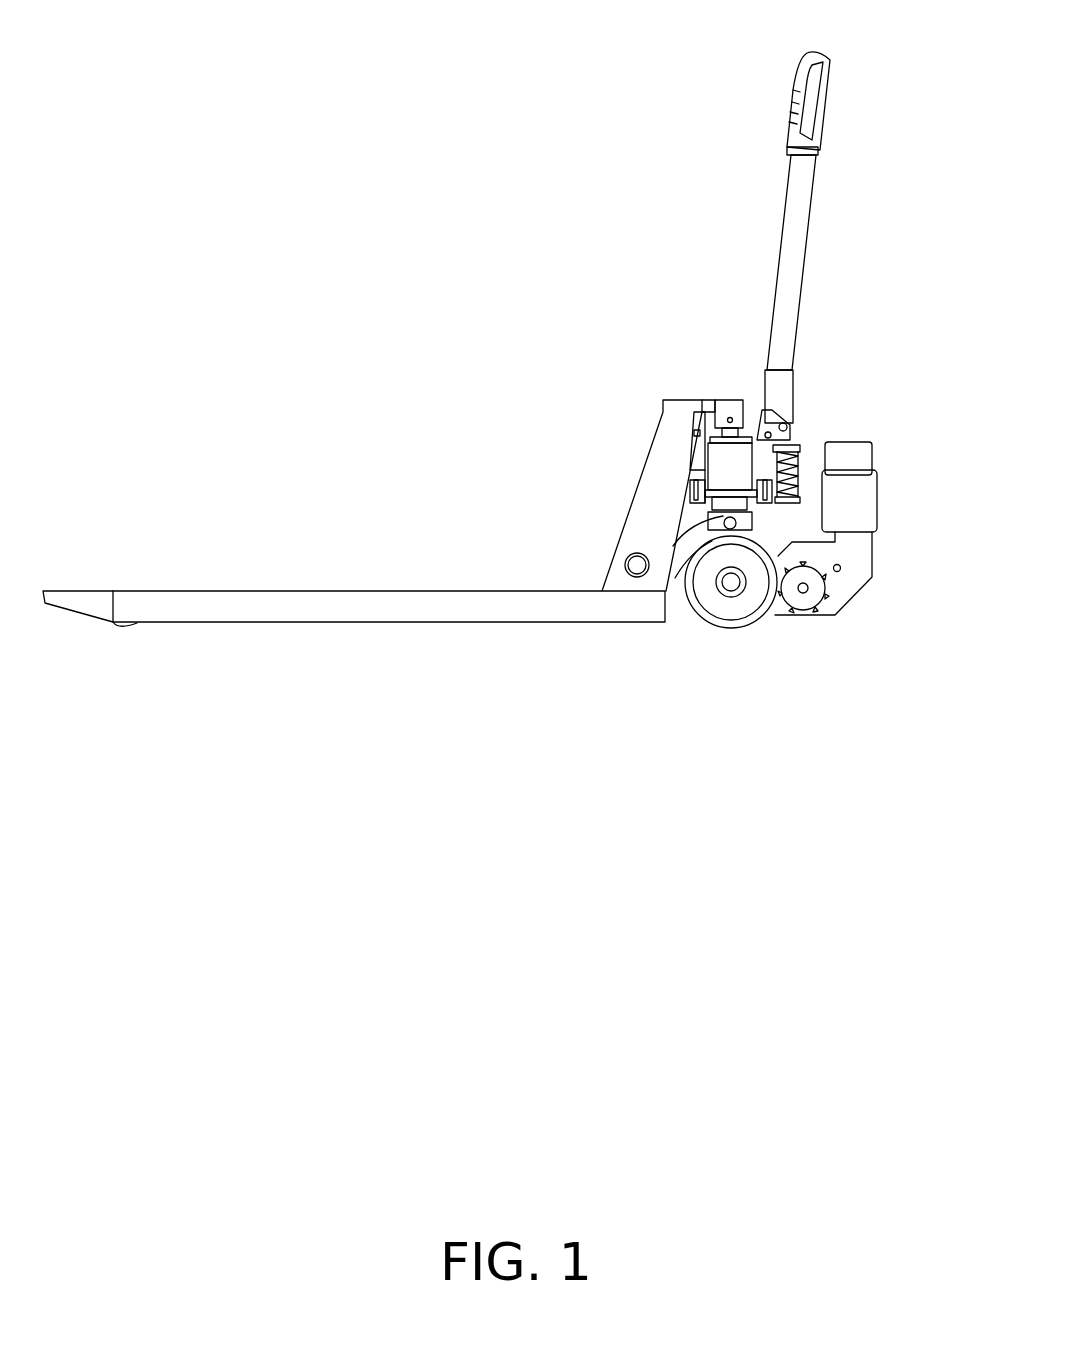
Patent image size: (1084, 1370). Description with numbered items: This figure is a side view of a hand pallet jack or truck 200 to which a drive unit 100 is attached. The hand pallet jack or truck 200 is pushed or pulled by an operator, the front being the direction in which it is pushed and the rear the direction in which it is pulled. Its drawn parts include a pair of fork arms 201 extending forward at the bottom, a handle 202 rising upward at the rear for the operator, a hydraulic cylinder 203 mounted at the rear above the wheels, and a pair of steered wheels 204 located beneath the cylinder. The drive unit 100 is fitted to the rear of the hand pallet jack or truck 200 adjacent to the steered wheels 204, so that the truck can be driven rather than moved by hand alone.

The drive unit 100 is at (892, 448).
The hand pallet jack or truck 200 is at (540, 170).
The fork arms 201 is at (312, 590).
The handle 202 is at (817, 88).
The hydraulic cylinder 203 is at (727, 458).
The steered wheels 204 is at (725, 606).